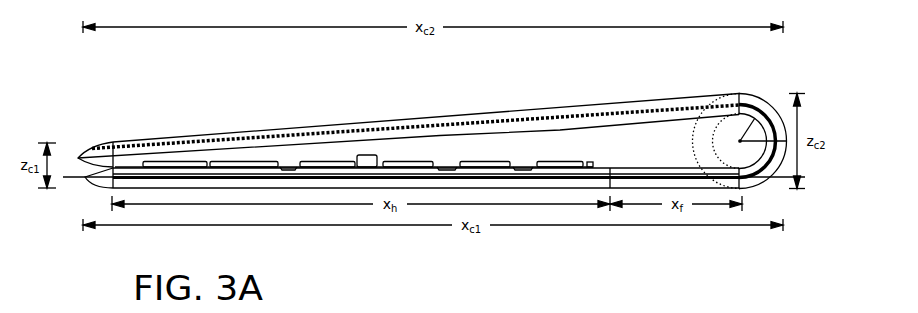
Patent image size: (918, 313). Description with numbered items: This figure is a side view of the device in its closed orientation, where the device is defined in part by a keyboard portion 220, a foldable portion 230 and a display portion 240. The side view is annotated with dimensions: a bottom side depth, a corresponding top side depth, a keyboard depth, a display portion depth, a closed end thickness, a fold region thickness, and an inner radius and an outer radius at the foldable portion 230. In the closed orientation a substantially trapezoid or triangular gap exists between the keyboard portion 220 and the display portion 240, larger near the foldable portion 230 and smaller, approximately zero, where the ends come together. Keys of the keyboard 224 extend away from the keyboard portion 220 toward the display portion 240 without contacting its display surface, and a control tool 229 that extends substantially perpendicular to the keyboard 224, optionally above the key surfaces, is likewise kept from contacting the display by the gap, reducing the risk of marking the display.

The keyboard portion 220 is at (332, 187).
The keyboard 224 is at (592, 160).
The control tool 229 is at (375, 154).
The foldable portion 230 is at (760, 101).
The display portion 240 is at (472, 112).